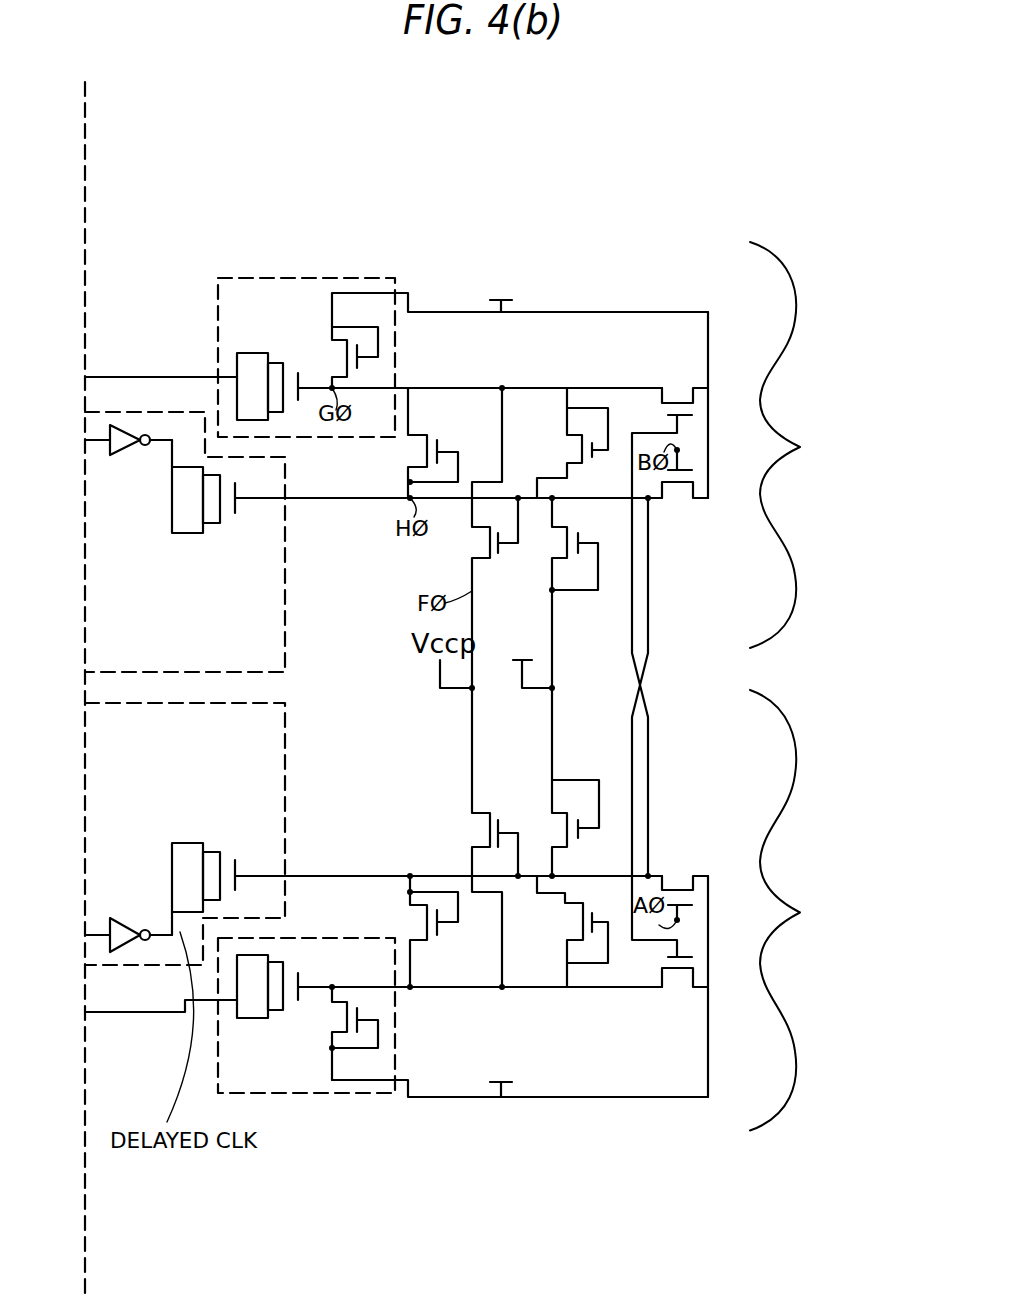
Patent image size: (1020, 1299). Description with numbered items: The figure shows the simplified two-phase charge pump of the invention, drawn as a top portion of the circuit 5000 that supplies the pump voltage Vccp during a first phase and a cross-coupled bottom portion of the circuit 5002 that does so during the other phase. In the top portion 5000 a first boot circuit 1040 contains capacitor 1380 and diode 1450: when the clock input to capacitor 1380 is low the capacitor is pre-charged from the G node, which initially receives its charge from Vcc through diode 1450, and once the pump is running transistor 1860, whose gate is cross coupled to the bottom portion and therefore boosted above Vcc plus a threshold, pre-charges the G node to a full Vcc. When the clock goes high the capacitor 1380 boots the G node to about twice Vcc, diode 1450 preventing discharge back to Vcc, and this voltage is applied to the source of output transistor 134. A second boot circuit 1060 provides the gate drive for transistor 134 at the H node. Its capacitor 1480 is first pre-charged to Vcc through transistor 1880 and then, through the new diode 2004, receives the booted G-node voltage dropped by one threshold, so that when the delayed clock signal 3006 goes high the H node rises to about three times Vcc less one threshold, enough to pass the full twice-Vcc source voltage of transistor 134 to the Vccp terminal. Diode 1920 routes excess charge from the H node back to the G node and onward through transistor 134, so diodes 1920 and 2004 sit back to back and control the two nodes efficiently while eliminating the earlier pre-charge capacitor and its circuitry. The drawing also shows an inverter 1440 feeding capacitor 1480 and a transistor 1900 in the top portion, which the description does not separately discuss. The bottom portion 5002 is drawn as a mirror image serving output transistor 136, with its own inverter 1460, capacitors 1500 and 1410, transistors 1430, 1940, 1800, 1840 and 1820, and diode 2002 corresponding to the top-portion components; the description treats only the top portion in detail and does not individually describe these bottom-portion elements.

The delayed clock signal 3006 is at (158, 438).
The first boot circuit 1040 is at (398, 343).
The second boot circuit 1060 is at (285, 640).
The capacitor 1380 is at (287, 365).
The diode 1450 is at (338, 358).
The inverter 1440 is at (127, 448).
The capacitor 1480 is at (212, 523).
The diode 1920 is at (412, 457).
The transistor 1860 is at (682, 403).
The transistor 1880 is at (678, 483).
The diode 2004 is at (583, 452).
The output transistor 134 is at (497, 527).
The transistor 1900 is at (563, 543).
The transistor 1800 is at (565, 828).
The output transistor 136 is at (472, 853).
The transistor 1840 is at (673, 890).
The transistor 1820 is at (680, 973).
The transistor 2002 is at (608, 950).
The transistor 1940 is at (413, 925).
The capacitor 1500 is at (213, 843).
The inverter 1460 is at (122, 923).
The capacitor 1410 is at (287, 1037).
The transistor 1430 is at (340, 1008).
The top portion of the circuit 5000 is at (809, 445).
The bottom portion of the circuit 5002 is at (809, 910).